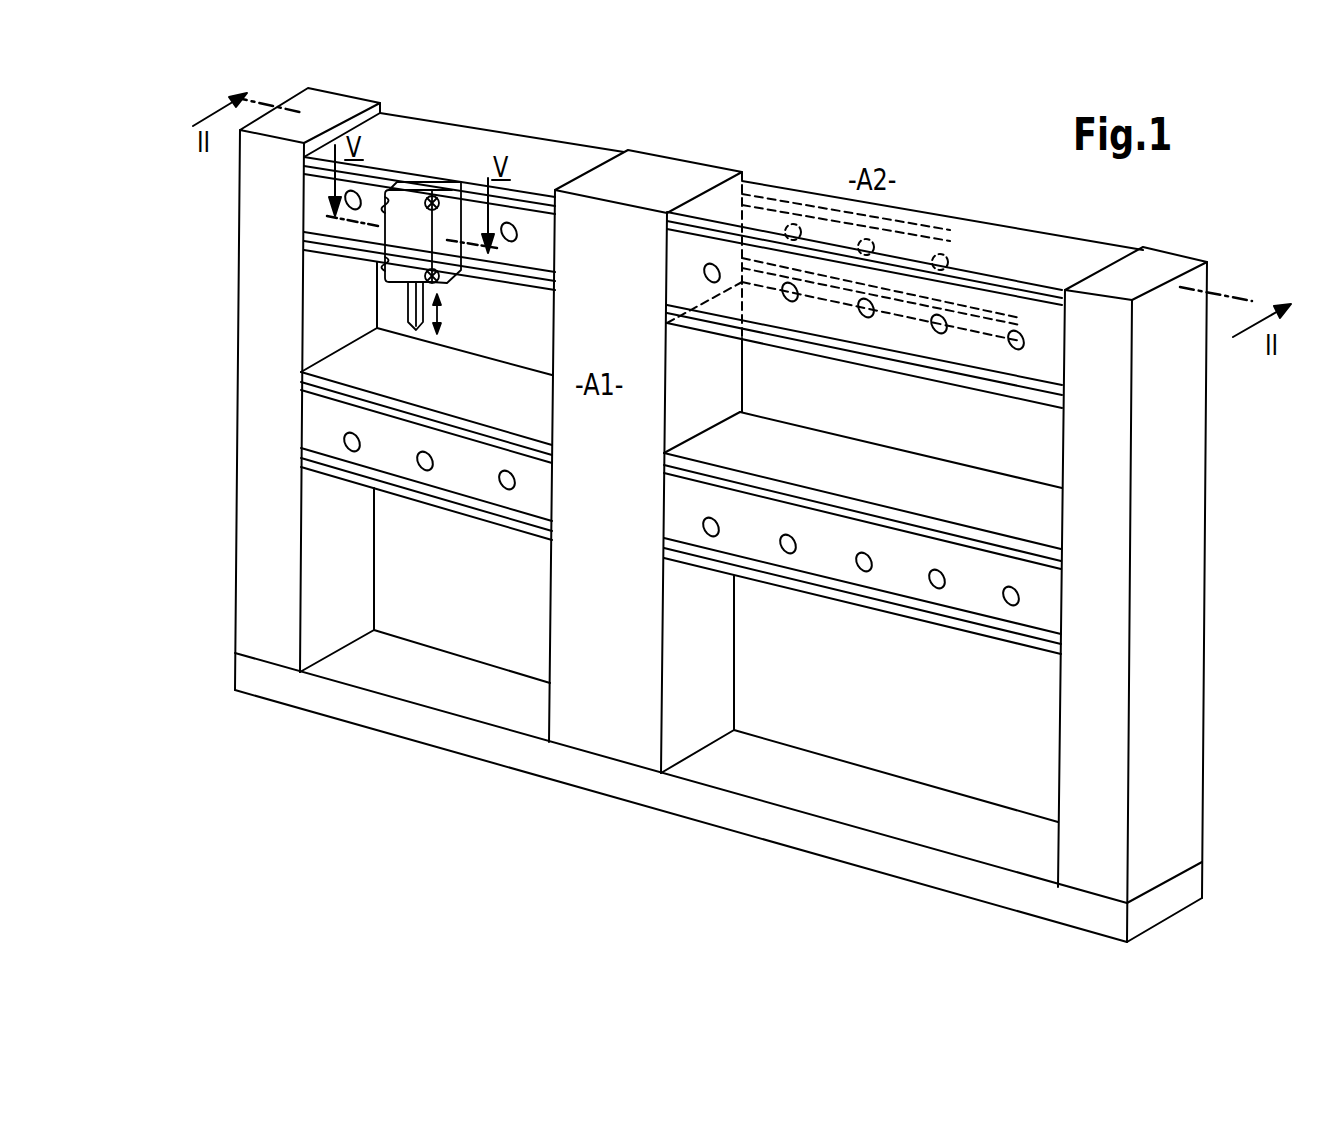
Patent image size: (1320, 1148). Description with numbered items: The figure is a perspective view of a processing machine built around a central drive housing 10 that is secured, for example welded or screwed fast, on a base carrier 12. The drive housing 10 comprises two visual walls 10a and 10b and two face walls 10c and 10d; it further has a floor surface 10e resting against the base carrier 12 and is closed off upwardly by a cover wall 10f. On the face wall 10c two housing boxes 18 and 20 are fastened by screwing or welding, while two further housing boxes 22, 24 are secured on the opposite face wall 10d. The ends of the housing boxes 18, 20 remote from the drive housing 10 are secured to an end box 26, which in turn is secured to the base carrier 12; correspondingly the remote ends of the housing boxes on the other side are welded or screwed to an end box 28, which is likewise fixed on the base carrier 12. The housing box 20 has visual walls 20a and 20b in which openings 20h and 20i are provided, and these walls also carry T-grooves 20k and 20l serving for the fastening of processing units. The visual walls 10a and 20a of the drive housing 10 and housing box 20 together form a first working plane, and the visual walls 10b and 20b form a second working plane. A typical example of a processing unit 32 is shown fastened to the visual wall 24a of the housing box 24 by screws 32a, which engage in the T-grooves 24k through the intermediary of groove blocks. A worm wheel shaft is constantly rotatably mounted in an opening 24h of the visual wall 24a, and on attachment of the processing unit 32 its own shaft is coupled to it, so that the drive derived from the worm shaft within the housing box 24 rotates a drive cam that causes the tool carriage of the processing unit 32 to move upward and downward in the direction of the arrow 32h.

The drive housing 10 is at (586, 729).
The visual wall 10a is at (575, 598).
The visual wall 10b is at (721, 168).
The face wall 10c is at (716, 646).
The face wall 10d is at (581, 170).
The floor surface 10e is at (689, 764).
The cover wall 10f is at (643, 181).
The base carrier 12 is at (836, 773).
The housing box 18 is at (897, 628).
The housing box 20 is at (990, 398).
The visual wall 20a is at (827, 323).
The visual wall 20b is at (1017, 230).
The openings 20h is at (712, 285).
The openings 20i is at (800, 226).
The T-grooves 20k is at (1002, 300).
The T-grooves 20l is at (914, 230).
The housing box 22 is at (434, 504).
The housing box 24 is at (537, 307).
The visual wall 24a is at (312, 198).
The opening 24h is at (361, 205).
The T-grooves 24k is at (348, 243).
The end box 26 is at (1193, 682).
The end box 28 is at (258, 470).
The processing unit 32 is at (433, 185).
The screws 32a is at (447, 270).
The arrow 32h is at (448, 332).